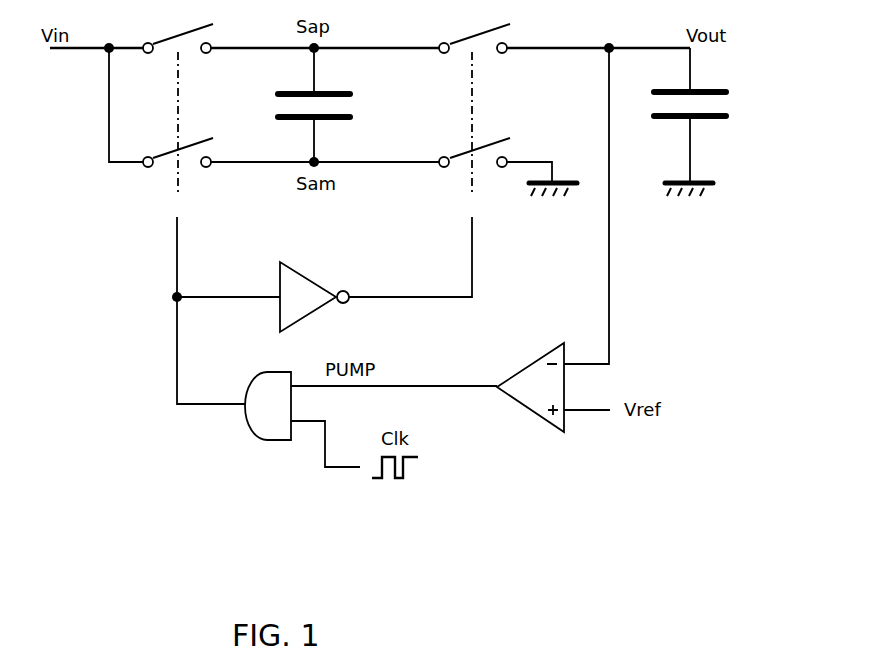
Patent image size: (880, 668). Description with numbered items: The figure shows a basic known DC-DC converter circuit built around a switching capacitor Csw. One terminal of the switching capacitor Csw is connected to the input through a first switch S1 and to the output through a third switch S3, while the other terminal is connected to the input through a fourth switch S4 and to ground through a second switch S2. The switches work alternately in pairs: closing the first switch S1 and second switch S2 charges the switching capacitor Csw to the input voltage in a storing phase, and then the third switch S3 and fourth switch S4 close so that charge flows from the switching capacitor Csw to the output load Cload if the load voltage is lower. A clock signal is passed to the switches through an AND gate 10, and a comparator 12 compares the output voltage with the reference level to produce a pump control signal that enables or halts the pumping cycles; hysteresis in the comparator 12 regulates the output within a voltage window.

The AND gate 10 is at (248, 421).
The comparator 12 is at (533, 414).
The first switch S1 is at (171, 34).
The second switch S2 is at (468, 148).
The third switch S3 is at (468, 34).
The fourth switch S4 is at (171, 148).
The switching capacitor Csw is at (339, 105).
The output load Cload is at (719, 115).